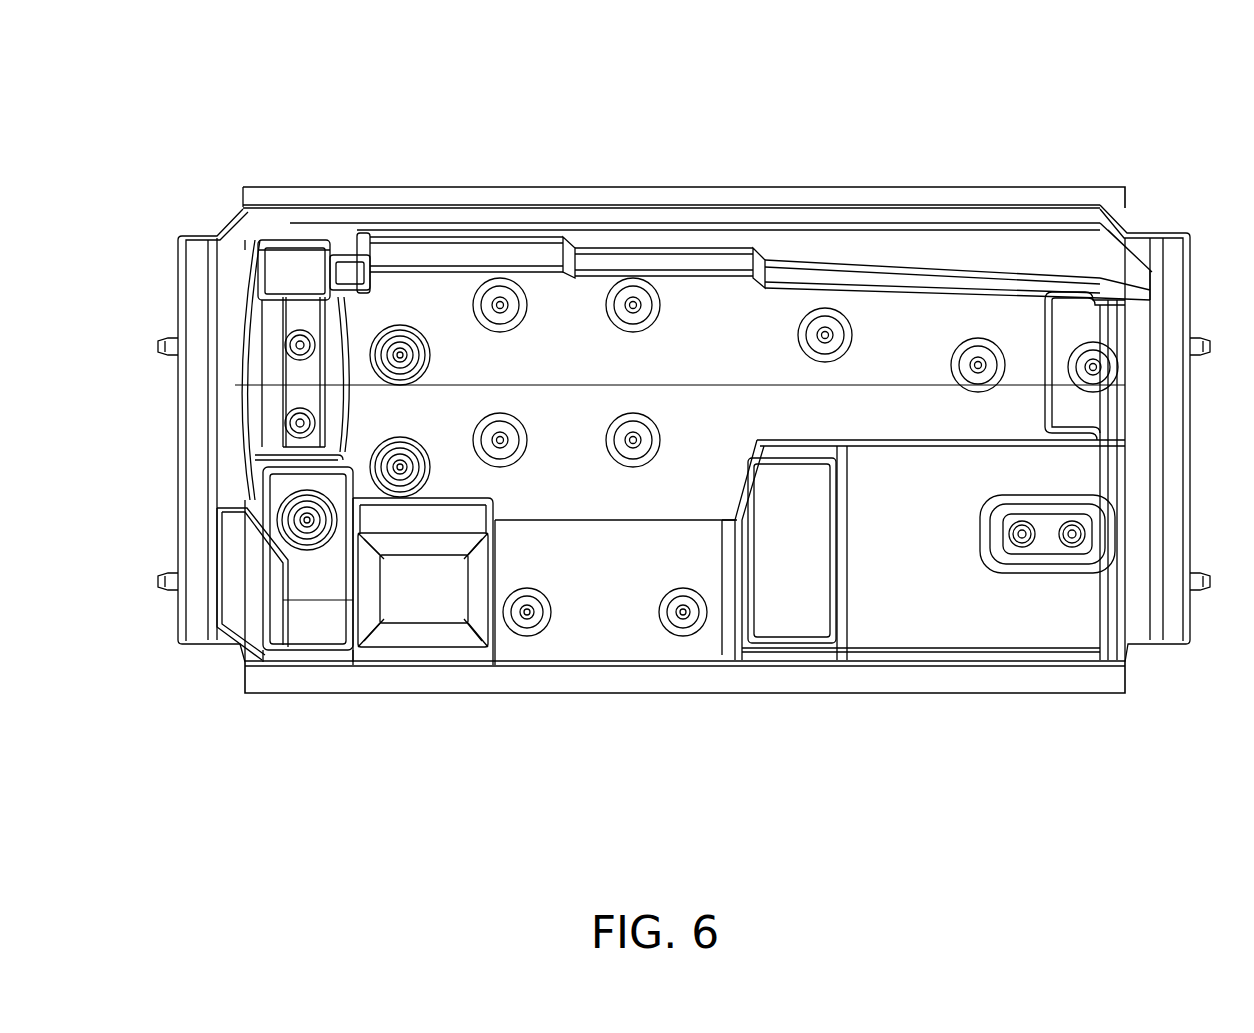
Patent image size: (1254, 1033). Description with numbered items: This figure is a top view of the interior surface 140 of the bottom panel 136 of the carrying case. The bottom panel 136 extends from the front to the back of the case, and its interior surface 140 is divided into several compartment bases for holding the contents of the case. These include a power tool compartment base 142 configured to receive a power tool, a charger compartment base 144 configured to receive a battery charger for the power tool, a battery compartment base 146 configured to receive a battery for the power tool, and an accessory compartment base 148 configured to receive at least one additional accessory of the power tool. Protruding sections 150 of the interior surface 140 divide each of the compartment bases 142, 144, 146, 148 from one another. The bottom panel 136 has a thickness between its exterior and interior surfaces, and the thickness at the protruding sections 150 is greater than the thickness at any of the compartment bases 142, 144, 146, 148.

The bottom panel 136 is at (208, 116).
The interior surface 140 is at (588, 452).
The power tool compartment base 142 is at (425, 243).
The charger compartment base 144 is at (1074, 325).
The battery compartment base 146 is at (943, 618).
The accessory compartment base 148 is at (430, 622).
The protruding sections 150 is at (845, 255).